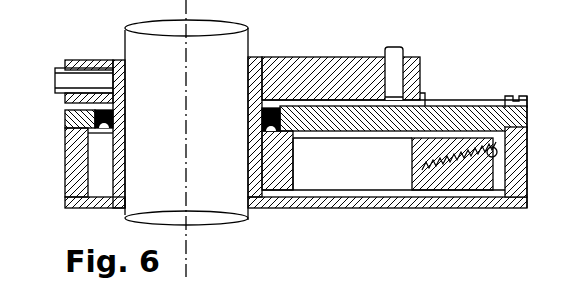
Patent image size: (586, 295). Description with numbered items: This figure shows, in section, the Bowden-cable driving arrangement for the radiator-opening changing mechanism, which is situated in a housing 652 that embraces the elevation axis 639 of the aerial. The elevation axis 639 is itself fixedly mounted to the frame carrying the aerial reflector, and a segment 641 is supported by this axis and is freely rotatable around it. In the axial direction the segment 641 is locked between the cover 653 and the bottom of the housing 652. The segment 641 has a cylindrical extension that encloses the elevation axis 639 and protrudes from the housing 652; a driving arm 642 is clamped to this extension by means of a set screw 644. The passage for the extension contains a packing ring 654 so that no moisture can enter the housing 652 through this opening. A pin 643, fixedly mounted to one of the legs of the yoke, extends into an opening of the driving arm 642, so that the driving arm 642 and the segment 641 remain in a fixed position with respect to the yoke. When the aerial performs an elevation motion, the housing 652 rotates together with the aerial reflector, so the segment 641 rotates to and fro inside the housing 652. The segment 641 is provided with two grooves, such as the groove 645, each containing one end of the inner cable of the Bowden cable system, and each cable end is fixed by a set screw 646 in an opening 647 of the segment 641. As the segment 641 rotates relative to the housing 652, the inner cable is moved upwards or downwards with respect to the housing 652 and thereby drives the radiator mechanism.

The elevation axis 639 is at (186, 122).
The set screw 644 is at (55, 82).
The driving arm 642 is at (340, 56).
The pin 643 is at (414, 47).
The set screw 646 is at (444, 150).
The packing ring 654 is at (282, 128).
The cover 653 is at (486, 116).
The housing 652 is at (527, 152).
The segment 641 is at (445, 184).
The groove 645 is at (495, 175).
The opening 647 is at (418, 169).